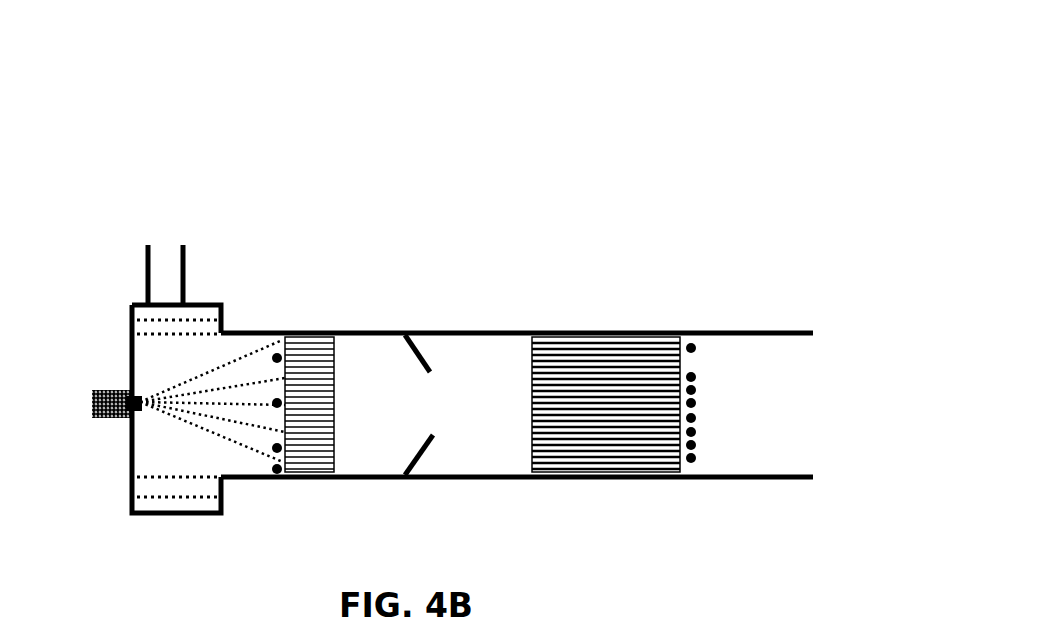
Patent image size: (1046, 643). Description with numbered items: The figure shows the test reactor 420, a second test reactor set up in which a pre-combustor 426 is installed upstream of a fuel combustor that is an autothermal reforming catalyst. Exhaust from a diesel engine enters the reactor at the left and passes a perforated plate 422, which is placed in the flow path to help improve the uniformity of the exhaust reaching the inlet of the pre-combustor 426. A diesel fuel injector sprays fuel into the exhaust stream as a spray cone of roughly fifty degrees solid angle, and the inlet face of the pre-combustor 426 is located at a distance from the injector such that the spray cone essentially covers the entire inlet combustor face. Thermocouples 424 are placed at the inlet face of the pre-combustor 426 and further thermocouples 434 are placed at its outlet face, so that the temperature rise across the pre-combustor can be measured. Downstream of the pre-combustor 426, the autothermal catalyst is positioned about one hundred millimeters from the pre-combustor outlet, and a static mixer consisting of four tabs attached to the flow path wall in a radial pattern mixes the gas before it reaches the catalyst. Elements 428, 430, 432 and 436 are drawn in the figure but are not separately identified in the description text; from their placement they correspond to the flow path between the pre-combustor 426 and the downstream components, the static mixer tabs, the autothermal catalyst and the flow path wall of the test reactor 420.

The test reactor 420 is at (467, 133).
The perforated plate 422 is at (152, 327).
The inlet thermocouples 424 is at (279, 352).
The pre-combustor 426 is at (310, 365).
The optical chamber 428 is at (368, 402).
The mirrors 430 is at (429, 354).
The second grating 432 is at (600, 387).
The outlet thermocouples 434 is at (694, 374).
The tube housing 436 is at (768, 329).